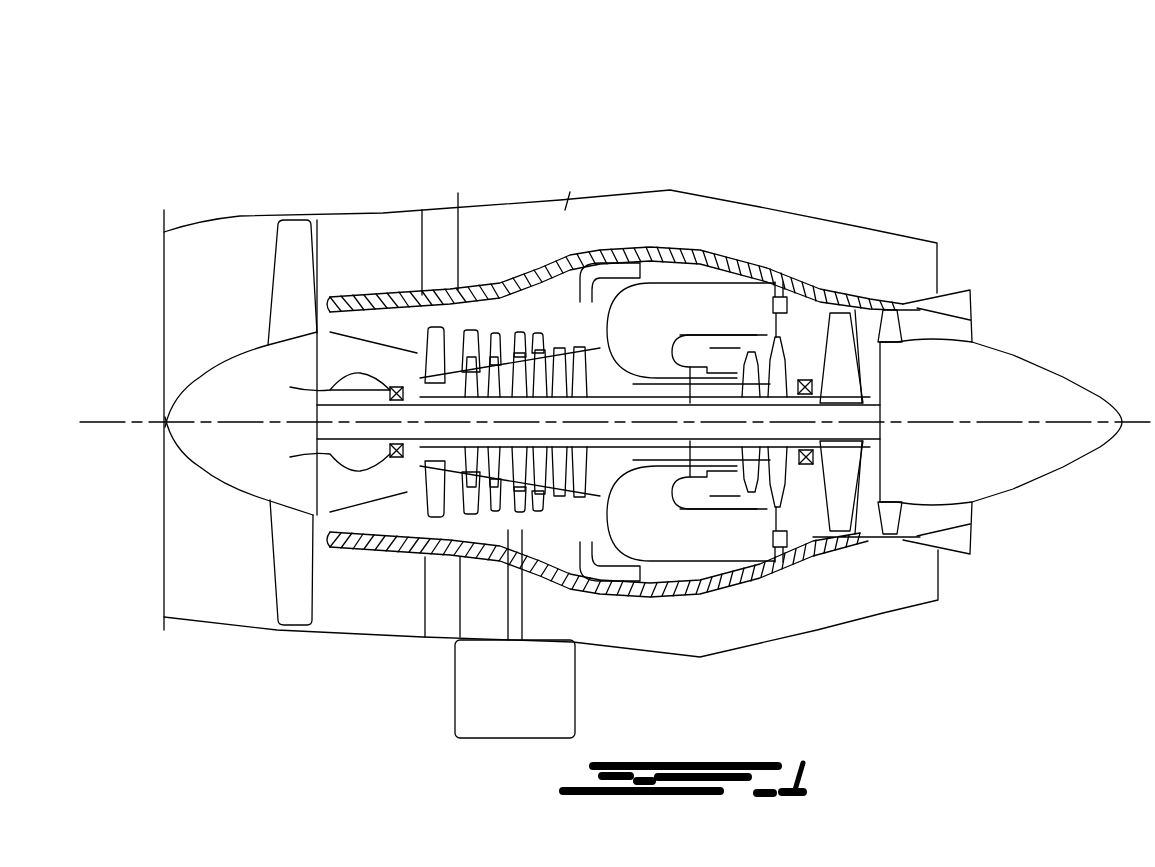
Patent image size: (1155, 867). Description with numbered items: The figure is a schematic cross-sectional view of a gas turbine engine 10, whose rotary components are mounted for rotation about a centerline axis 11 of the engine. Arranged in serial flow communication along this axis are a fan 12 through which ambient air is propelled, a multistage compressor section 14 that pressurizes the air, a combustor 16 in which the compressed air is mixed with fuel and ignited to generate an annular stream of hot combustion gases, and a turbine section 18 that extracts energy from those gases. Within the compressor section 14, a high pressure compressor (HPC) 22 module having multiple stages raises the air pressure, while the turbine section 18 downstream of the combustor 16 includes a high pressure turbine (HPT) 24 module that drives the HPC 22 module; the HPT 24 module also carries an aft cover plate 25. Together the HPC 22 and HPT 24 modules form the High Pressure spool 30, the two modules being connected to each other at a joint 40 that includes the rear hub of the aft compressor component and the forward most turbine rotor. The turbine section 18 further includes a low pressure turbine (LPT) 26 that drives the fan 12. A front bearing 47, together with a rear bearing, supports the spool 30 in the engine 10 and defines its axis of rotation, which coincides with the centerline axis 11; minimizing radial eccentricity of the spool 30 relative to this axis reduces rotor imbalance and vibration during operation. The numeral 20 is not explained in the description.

The gas turbine engine 10 is at (820, 150).
The centerline axis 11 is at (1147, 418).
The fan 12 is at (287, 555).
The multistage compressor section 14 is at (440, 583).
The combustor 16 is at (690, 300).
The turbine section 18 is at (803, 537).
The low pressure compressor 20 is at (486, 324).
The high pressure compressor (HPC) module 22 is at (585, 287).
The high pressure turbine (HPT) module 24 is at (750, 350).
The aft cover plate 25 is at (777, 400).
The low pressure turbine (LPT) 26 is at (790, 335).
The High Pressure spool 30 is at (608, 297).
The joint 40 is at (805, 460).
The front bearing 47 is at (340, 382).